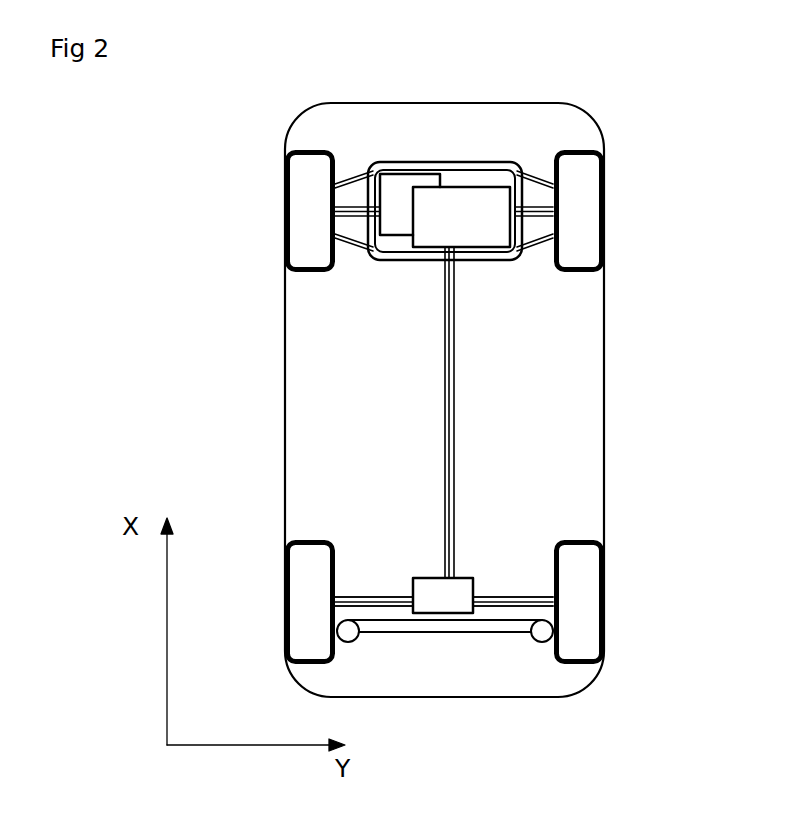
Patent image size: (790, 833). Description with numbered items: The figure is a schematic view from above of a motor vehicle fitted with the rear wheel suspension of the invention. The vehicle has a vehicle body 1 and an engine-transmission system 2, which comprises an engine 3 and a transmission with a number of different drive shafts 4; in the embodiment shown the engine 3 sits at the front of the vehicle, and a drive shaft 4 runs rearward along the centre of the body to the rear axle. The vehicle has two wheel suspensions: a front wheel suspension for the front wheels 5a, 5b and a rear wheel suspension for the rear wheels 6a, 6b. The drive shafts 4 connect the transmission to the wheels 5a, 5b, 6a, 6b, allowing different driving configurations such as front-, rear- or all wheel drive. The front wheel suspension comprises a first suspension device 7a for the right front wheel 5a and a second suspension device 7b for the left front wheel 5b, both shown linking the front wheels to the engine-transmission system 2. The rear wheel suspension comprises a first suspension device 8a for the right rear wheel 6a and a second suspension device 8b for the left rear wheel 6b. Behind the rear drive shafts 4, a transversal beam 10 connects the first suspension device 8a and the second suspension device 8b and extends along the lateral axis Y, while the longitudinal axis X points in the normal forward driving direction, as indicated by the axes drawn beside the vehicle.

The vehicle body 1 is at (286, 365).
The engine-transmission system 2 is at (416, 130).
The engine 3 is at (458, 212).
The drive shafts 4 is at (345, 213).
The right front wheel 5a is at (585, 167).
The left front wheel 5b is at (307, 185).
The right rear wheel 6a is at (588, 578).
The left rear wheel 6b is at (298, 595).
The first suspension device 7a is at (528, 185).
The second suspension device 7b is at (357, 183).
The first suspension device 8a is at (542, 570).
The second suspension device 8b is at (350, 570).
The transversal beam 10 is at (423, 627).